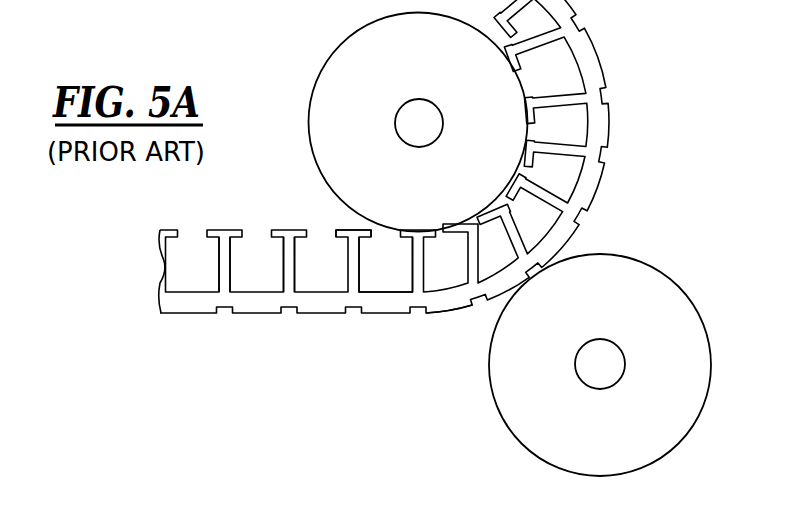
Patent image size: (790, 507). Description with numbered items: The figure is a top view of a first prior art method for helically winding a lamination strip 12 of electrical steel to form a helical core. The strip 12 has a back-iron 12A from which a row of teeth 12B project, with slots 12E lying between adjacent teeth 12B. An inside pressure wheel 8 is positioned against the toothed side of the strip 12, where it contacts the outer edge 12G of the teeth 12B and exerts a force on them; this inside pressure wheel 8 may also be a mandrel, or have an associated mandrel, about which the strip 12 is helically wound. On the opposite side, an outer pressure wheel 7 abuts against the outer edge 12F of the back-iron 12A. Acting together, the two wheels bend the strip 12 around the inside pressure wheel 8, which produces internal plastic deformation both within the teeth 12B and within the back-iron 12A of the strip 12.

The inside pressure wheel 8 is at (354, 66).
The outer pressure wheel 7 is at (532, 389).
The strip 12 is at (344, 216).
The back-iron 12A is at (326, 306).
The teeth 12B is at (288, 272).
The slot 12E is at (380, 292).
The outer edge of the back-iron 12F is at (448, 316).
The outer edge of the teeth 12G is at (353, 230).